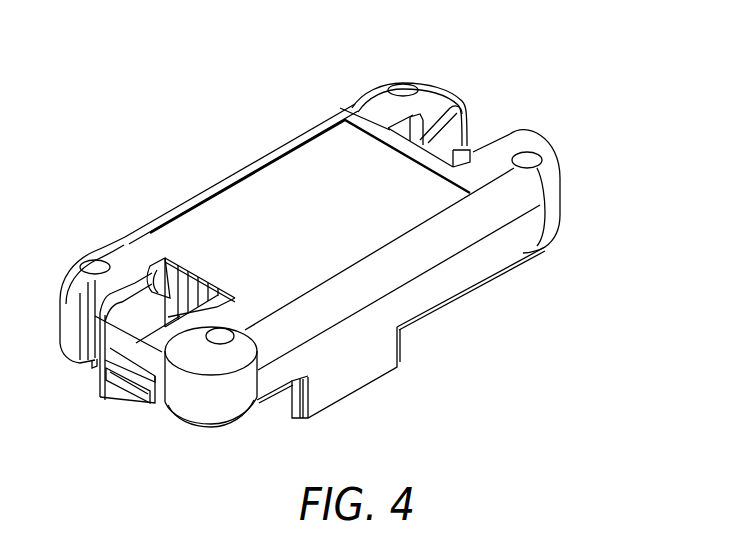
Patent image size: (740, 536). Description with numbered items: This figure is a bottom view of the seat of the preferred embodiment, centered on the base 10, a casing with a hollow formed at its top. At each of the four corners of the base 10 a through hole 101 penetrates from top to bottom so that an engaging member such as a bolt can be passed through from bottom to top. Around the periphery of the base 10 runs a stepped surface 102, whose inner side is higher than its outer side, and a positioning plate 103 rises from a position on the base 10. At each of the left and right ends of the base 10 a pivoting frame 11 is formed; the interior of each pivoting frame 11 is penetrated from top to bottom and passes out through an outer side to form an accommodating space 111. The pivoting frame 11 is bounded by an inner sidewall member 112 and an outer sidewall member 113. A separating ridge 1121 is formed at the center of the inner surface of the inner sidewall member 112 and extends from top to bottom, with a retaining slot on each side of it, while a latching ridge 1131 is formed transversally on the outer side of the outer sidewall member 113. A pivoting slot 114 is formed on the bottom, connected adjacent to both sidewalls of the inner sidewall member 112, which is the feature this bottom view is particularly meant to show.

The base 10 is at (221, 155).
The pivoting frame 11 is at (480, 128).
The through hole 101 is at (403, 88).
The stepped surface 102 is at (480, 283).
The positioning plate 103 is at (350, 373).
The accommodating space 111 is at (442, 140).
The inner sidewall member 112 is at (185, 298).
The separating ridge 1121 is at (203, 300).
The outer sidewall member 113 is at (123, 396).
The latching ridge 1131 is at (140, 408).
The pivoting slot 114 is at (405, 135).